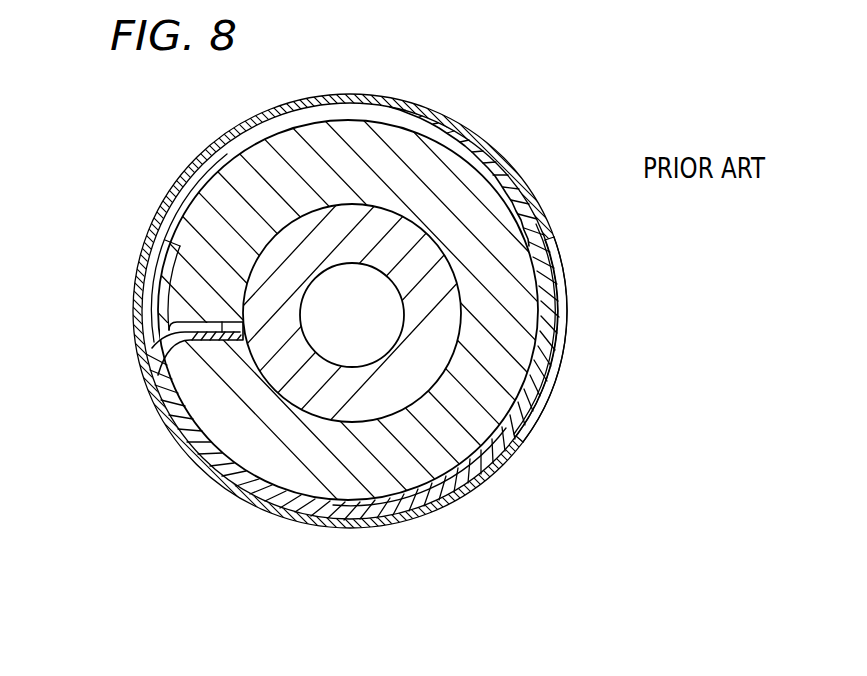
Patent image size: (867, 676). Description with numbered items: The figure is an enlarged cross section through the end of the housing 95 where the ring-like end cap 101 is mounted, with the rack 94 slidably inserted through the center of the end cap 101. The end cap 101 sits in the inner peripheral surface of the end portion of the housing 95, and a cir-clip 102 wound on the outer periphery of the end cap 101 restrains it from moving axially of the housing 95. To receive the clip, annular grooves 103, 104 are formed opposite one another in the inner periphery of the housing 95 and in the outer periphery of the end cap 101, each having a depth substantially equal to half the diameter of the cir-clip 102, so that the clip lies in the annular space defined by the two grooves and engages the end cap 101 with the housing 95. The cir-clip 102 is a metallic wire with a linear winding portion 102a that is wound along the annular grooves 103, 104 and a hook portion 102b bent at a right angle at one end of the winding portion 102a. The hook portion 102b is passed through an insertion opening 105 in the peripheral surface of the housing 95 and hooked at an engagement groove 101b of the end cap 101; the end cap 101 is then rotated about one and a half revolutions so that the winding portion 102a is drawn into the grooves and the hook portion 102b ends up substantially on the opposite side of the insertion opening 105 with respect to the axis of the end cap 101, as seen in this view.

The rack 94 is at (373, 232).
The housing 95 is at (490, 147).
The end cap 101 is at (313, 463).
The engagement groove 101b is at (240, 350).
The cir-clip 102 is at (548, 354).
The winding portion 102a is at (372, 510).
The hook portion 102b is at (200, 340).
The annular groove 103 is at (153, 270).
The annular groove 104 is at (150, 318).
The insertion opening 105 is at (558, 280).